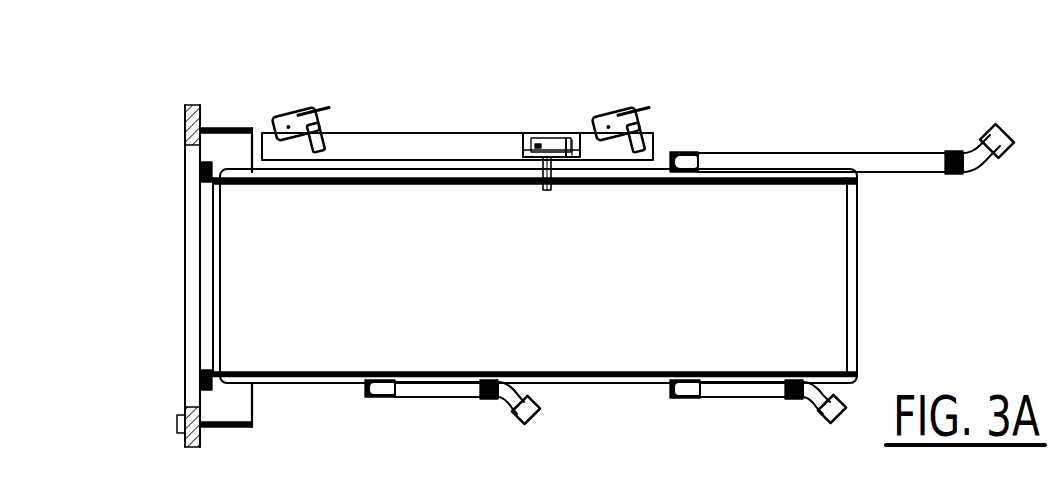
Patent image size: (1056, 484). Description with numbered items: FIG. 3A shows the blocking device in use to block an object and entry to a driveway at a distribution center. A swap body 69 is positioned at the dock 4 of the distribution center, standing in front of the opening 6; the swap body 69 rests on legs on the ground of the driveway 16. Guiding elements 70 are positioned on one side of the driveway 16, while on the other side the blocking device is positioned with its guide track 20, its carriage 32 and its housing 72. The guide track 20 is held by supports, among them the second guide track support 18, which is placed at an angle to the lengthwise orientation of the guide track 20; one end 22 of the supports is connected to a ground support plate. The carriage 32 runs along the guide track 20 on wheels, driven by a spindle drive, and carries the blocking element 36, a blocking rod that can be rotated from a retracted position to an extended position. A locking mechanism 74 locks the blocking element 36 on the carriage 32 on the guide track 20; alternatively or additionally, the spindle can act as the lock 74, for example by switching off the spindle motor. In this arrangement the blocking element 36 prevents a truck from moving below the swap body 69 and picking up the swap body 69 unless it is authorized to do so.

The dock 4 is at (128, 129).
The opening 6 is at (185, 258).
The driveway 16 is at (893, 237).
The second guide track support 18 is at (558, 134).
The guide track 20 is at (362, 140).
The end of supports 22 is at (717, 127).
The carriage 32 is at (702, 92).
The blocking element 36 is at (556, 186).
The swap body 69 is at (820, 302).
The guiding elements 70 is at (890, 160).
The housing 72 is at (522, 100).
The locking mechanism 74 is at (506, 190).